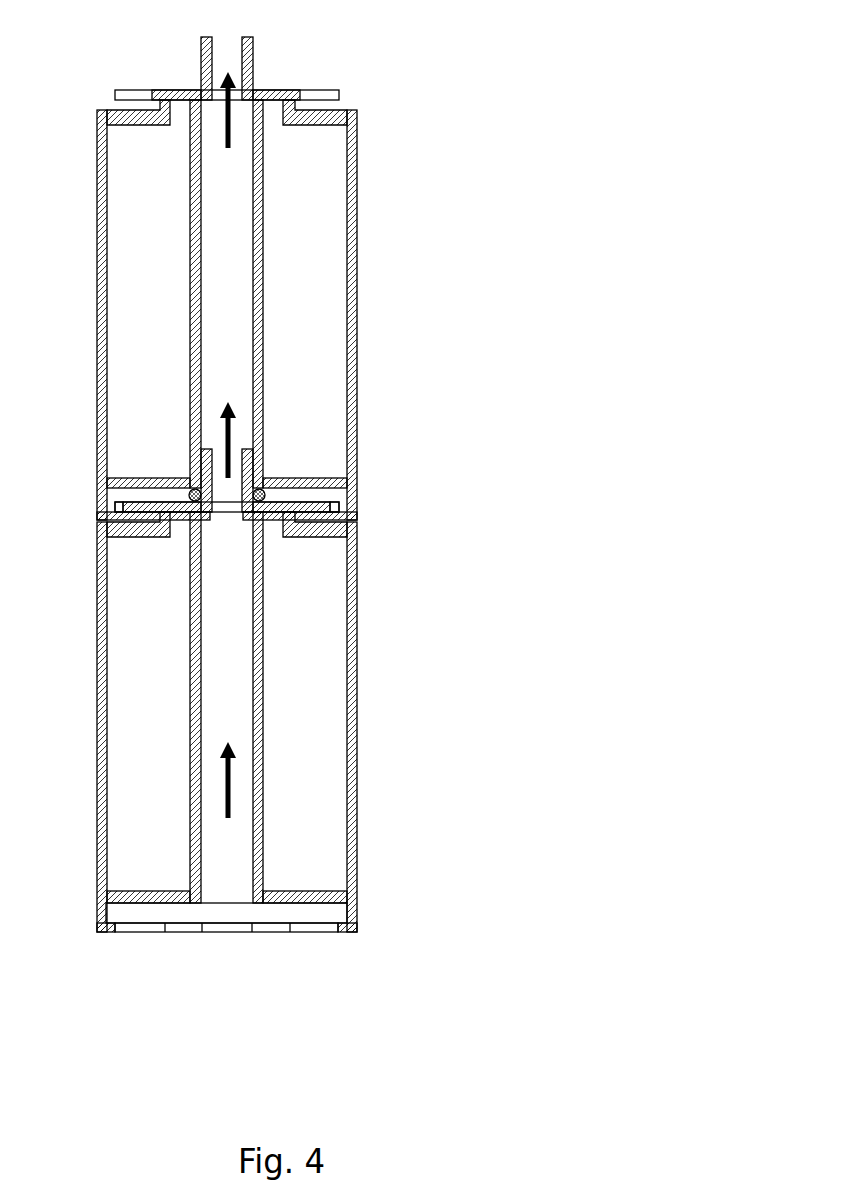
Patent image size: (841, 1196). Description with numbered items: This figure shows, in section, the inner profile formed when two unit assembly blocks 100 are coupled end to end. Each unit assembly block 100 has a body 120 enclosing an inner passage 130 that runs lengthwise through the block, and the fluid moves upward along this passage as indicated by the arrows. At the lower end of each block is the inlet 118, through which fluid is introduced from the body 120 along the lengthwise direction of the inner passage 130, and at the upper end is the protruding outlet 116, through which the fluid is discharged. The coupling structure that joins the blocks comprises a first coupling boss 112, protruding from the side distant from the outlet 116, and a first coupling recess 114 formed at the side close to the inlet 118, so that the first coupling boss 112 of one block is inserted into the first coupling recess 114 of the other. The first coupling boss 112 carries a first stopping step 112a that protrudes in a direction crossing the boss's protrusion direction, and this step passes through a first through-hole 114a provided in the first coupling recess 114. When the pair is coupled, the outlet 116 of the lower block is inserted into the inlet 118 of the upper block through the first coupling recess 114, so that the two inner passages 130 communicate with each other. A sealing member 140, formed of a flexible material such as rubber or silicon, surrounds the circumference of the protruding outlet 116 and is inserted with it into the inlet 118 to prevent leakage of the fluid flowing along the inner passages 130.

The unit assembly block 100 is at (283, 522).
The first coupling boss 112 is at (282, 108).
The first stopping step 112a is at (339, 95).
The first coupling recess 114 is at (105, 933).
The first through-hole 114a is at (313, 930).
The outlet 116 is at (245, 38).
The inlet 118 is at (223, 904).
The body 120 is at (357, 200).
The inner passage 130 is at (235, 253).
The sealing member 140 is at (187, 494).